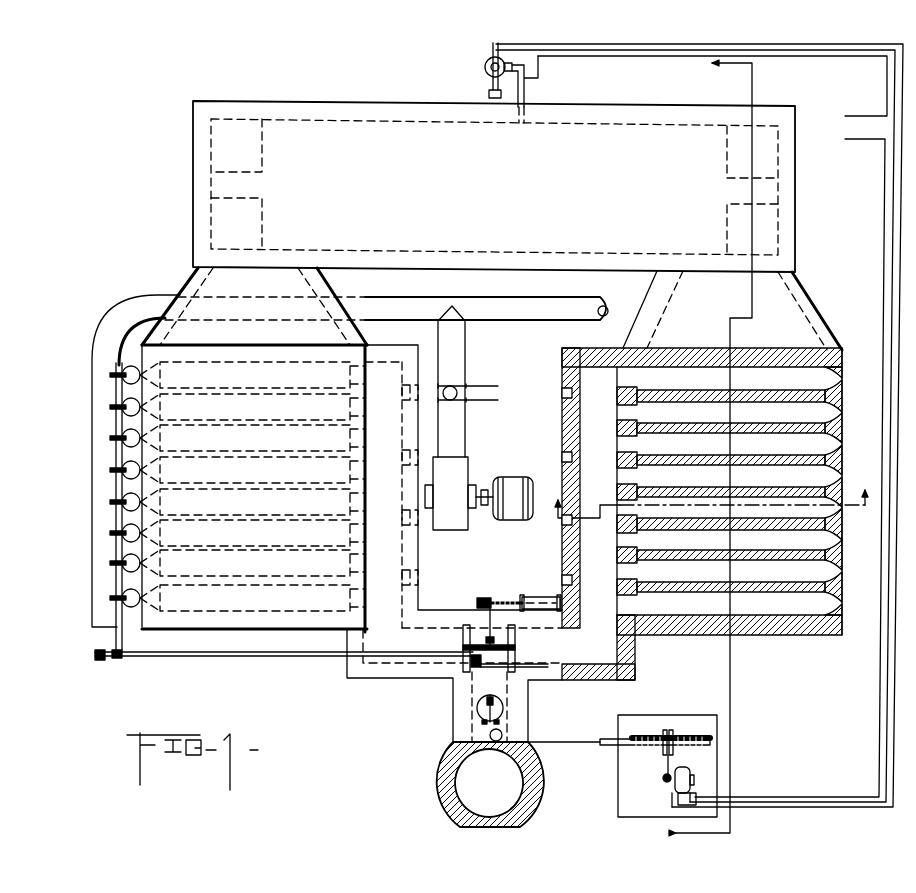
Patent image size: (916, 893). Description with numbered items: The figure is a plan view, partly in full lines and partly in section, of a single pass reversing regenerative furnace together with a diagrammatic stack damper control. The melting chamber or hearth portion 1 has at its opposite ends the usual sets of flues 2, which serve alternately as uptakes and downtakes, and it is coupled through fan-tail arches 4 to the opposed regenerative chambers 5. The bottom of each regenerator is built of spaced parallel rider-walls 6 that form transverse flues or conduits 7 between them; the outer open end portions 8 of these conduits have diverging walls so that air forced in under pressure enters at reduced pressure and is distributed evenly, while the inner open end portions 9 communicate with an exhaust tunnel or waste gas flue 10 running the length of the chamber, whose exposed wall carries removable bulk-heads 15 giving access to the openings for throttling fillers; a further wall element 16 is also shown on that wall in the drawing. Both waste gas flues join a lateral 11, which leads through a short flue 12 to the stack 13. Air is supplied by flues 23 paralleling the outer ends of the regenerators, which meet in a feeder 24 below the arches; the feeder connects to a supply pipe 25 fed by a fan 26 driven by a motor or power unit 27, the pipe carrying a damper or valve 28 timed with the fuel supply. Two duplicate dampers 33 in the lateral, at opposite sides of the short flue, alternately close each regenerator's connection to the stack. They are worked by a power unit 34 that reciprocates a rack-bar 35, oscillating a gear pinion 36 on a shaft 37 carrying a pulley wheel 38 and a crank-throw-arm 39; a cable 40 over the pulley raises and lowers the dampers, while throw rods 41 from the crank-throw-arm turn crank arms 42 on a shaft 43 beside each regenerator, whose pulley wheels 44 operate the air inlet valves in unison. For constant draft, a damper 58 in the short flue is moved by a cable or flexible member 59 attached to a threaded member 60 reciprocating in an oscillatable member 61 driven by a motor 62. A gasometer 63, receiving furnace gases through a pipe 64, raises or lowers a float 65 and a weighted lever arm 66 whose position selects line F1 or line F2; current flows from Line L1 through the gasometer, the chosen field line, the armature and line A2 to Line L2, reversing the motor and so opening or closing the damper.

The melting chamber or hearth portion 1 is at (494, 186).
The flues 2 is at (215, 140).
The fan-tail arches 4 is at (222, 283).
The regenerative chambers 5 is at (123, 352).
The rider-walls 6 is at (272, 550).
The flues or conduits 7 is at (721, 495).
The outer open end portions 8 is at (150, 380).
The inner open end portions 9 is at (355, 382).
The exhaust tunnel or waste gas flue 10 is at (562, 536).
The lateral 11 is at (570, 692).
The short flue 12 is at (472, 688).
The stack 13 is at (463, 788).
The bulk-heads 15 is at (564, 394).
The port 16 is at (566, 457).
The flues 23 is at (100, 430).
The feeder 24 is at (415, 298).
The supply pipe 25 is at (458, 350).
The fan 26 is at (448, 515).
The motor or power unit 27 is at (512, 508).
The damper or valve 28 is at (448, 398).
The dampers 33 is at (463, 640).
The power unit 34 is at (536, 598).
The rack-bar 35 is at (508, 599).
The gear pinion 36 is at (484, 597).
The shaft 37 is at (490, 620).
The pulley wheel 38 is at (478, 637).
The crank-throw-arm 39 is at (480, 667).
The cable 40 is at (515, 654).
The throw rods 41 is at (232, 657).
The crank arms 42 is at (105, 660).
The shaft 43 is at (116, 635).
The pulley wheels 44 is at (116, 378).
The damper 58 is at (478, 714).
The cable or flexible member 59 is at (556, 742).
The threaded member 60 is at (630, 746).
The oscillatable member 61 is at (672, 735).
The motor 62 is at (688, 768).
The gasometer 63 is at (485, 66).
The pipe 64 is at (526, 90).
The float 65 is at (490, 72).
The weighted lever arm 66 is at (489, 92).
The Line 1 L1 is at (699, 425).
The Line 2 L2 is at (790, 460).
The line A2 is at (697, 793).
The line F1 is at (678, 792).
The line F2 is at (699, 807).